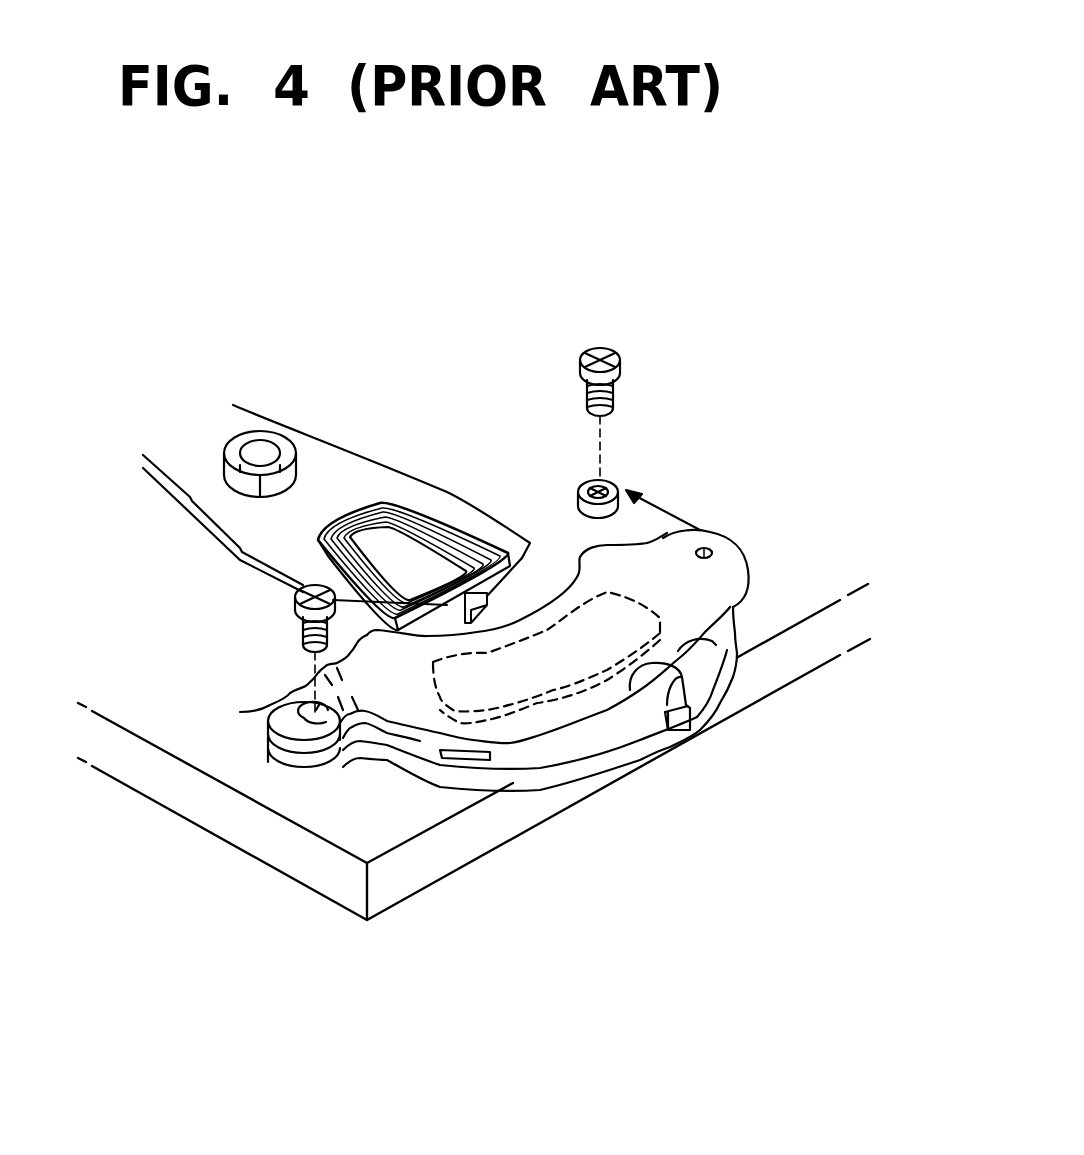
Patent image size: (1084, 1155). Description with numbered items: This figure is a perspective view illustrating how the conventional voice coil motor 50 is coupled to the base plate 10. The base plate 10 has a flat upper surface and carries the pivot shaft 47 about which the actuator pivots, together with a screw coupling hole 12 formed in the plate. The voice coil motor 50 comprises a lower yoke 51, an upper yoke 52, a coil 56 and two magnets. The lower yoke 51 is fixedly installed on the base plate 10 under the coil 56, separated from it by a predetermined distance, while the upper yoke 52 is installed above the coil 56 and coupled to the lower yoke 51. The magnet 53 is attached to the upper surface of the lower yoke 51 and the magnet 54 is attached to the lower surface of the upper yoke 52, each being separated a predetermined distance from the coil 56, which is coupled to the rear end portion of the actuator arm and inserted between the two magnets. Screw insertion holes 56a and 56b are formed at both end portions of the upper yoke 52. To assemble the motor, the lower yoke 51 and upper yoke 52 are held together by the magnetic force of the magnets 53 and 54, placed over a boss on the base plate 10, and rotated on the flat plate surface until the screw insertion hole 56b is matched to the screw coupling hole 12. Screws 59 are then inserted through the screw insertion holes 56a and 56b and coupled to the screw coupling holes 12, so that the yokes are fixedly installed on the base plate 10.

The base plate 10 is at (297, 863).
The screw coupling hole 12 is at (585, 483).
The pivot shaft 47 is at (267, 450).
The voice coil motor 50 is at (640, 730).
The lower yoke 51 is at (585, 780).
The upper yoke 52 is at (700, 598).
The magnet 53 is at (472, 757).
The magnet 54 is at (558, 620).
The coil 56 is at (452, 530).
The screw insertion hole 56a is at (265, 710).
The screw insertion hole 56b is at (700, 552).
The screw 59 is at (598, 345).